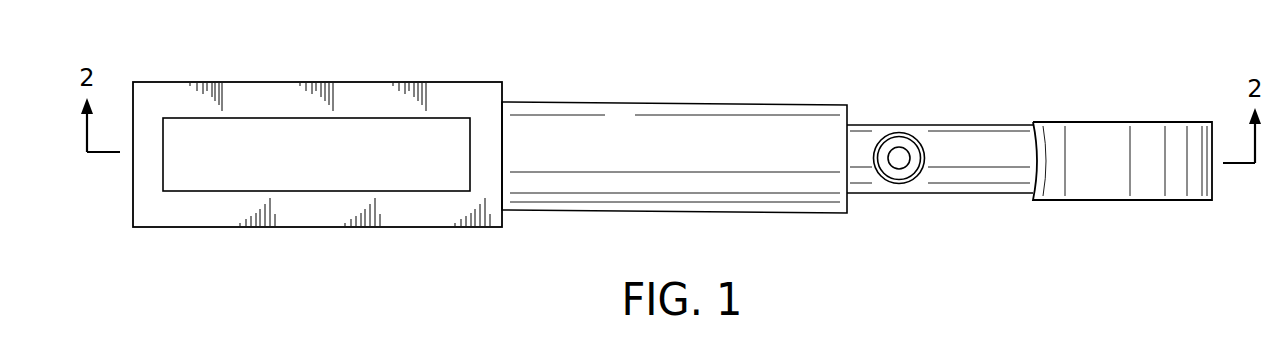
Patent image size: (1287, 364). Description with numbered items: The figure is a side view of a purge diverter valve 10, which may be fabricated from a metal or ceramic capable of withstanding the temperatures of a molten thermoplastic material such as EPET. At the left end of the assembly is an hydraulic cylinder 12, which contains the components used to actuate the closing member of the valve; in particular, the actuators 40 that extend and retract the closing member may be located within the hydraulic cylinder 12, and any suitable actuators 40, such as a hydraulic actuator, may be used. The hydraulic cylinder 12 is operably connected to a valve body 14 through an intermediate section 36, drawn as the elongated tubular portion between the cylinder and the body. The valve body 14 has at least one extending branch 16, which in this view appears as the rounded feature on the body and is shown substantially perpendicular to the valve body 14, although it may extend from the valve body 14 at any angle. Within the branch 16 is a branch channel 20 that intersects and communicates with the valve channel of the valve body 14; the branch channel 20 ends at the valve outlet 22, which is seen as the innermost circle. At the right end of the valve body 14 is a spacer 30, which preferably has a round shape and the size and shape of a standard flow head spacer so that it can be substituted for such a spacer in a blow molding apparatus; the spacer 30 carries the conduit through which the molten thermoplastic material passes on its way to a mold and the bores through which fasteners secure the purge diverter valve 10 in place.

The purge diverter valve 10 is at (765, 80).
The hydraulic cylinder 12 is at (258, 98).
The valve body 14 is at (993, 148).
The branch 16 is at (910, 179).
The branch channel 20 is at (895, 152).
The valve outlet 22 is at (902, 158).
The spacer 30 is at (1100, 178).
The intermediate section 36 is at (610, 147).
The actuators 40 is at (358, 143).